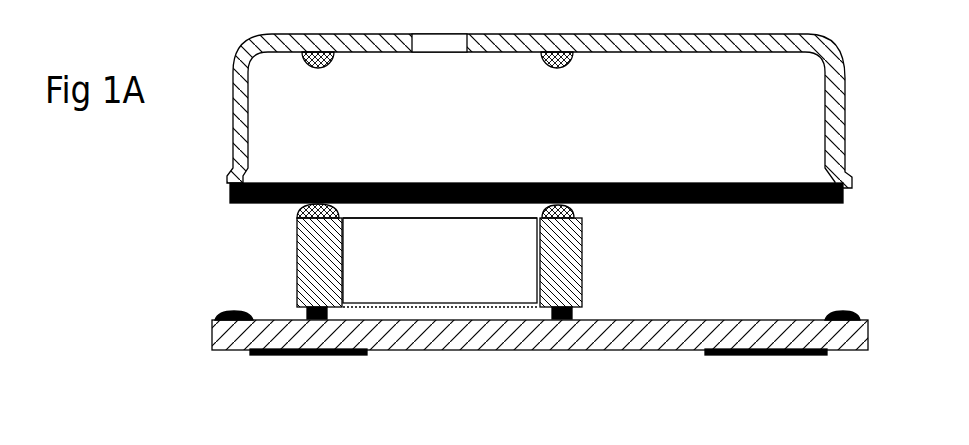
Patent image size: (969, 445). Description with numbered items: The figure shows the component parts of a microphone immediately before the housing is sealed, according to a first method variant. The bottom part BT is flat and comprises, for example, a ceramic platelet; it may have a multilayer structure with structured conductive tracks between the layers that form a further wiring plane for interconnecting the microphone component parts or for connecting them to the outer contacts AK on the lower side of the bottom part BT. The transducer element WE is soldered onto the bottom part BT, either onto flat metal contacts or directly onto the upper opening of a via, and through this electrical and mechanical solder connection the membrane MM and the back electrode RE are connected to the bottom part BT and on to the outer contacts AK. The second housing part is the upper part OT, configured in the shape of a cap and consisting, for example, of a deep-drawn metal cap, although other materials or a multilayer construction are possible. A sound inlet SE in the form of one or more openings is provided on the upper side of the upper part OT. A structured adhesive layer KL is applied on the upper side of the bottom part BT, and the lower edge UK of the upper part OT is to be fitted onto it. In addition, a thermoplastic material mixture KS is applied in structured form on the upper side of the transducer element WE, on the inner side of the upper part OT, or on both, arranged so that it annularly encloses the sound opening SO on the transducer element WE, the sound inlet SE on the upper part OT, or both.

The upper part OT is at (673, 42).
The sound inlet SE is at (432, 55).
The thermoplastic material mixture KS is at (562, 64).
The lower edge UK is at (237, 203).
The transducer element WE is at (575, 228).
The membrane MM is at (427, 300).
The sound opening SO is at (456, 220).
The back electrode RE is at (470, 307).
The bottom part BT is at (657, 318).
The structured adhesive layer KL is at (842, 312).
The outer contacts AK is at (790, 355).